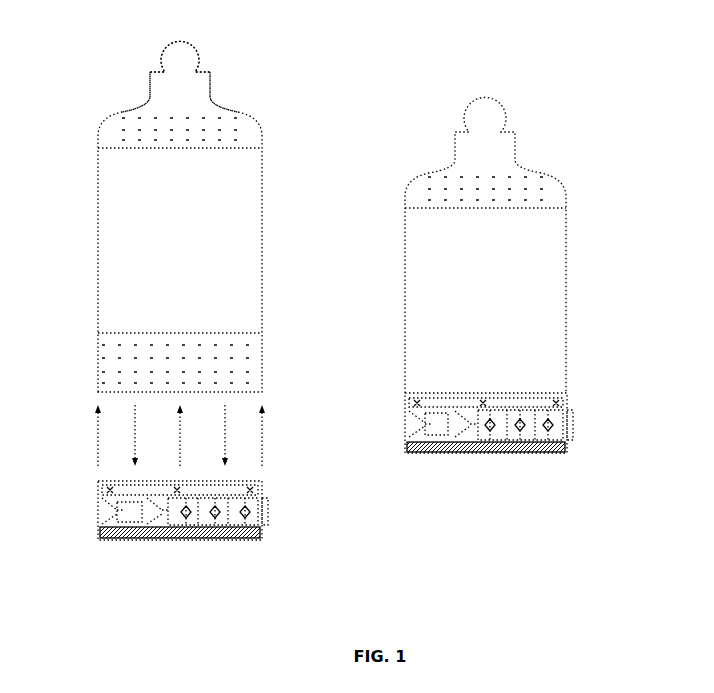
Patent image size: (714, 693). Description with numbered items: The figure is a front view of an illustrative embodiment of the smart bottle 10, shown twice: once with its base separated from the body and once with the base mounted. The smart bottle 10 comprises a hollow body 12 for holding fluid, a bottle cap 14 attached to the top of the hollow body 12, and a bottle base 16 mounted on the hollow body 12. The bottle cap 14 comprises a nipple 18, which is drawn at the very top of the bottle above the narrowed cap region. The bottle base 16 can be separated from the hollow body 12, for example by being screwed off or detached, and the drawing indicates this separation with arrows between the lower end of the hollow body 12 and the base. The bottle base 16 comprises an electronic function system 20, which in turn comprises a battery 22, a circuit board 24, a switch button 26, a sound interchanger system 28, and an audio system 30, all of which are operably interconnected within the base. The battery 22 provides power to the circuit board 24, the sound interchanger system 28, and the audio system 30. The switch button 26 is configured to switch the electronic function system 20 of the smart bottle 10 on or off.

The smart bottle 10 is at (275, 83).
The hollow body 12 is at (97, 243).
The bottle cap 14 is at (136, 104).
The bottle base 16 is at (97, 515).
The nipple 18 is at (148, 62).
The electronic function system 20 is at (276, 518).
The battery 22 is at (405, 428).
The circuit board 24 is at (493, 455).
The switch button 26 is at (569, 455).
The sound interchanger system 28 is at (571, 418).
The audio system 30 is at (548, 394).